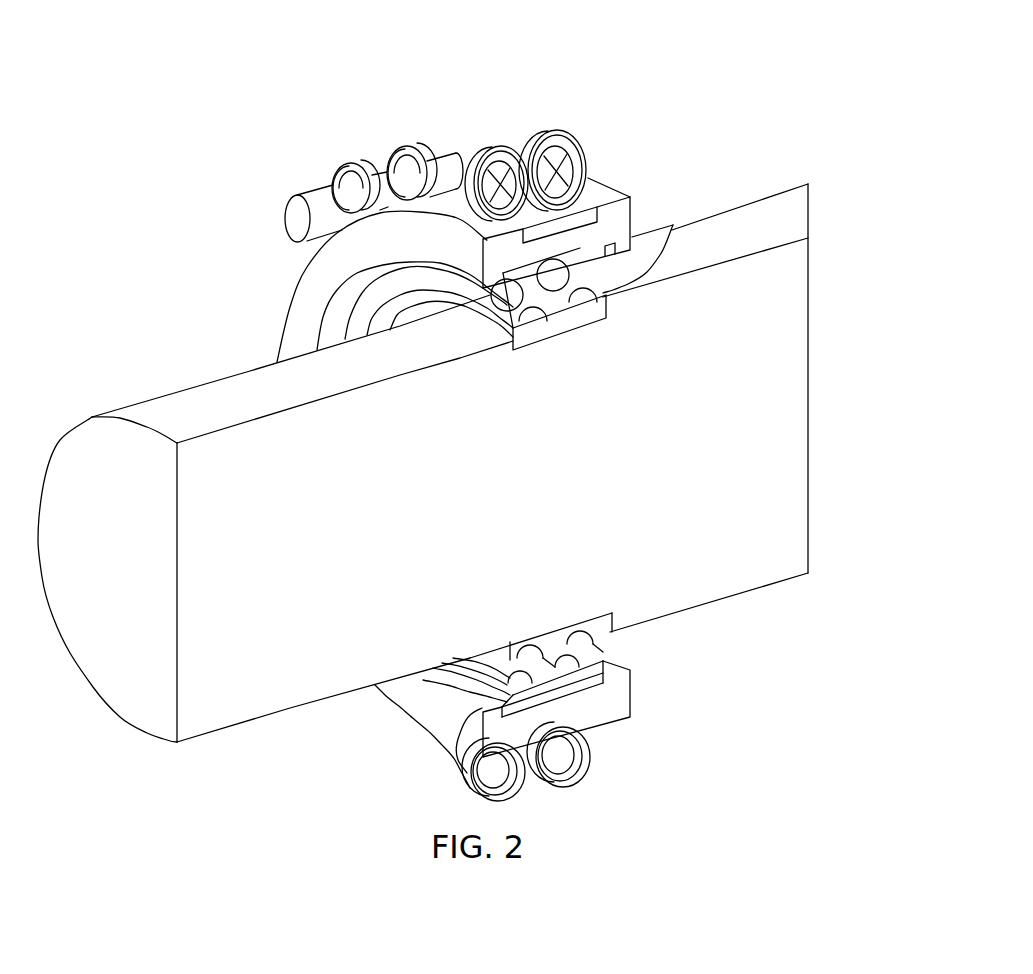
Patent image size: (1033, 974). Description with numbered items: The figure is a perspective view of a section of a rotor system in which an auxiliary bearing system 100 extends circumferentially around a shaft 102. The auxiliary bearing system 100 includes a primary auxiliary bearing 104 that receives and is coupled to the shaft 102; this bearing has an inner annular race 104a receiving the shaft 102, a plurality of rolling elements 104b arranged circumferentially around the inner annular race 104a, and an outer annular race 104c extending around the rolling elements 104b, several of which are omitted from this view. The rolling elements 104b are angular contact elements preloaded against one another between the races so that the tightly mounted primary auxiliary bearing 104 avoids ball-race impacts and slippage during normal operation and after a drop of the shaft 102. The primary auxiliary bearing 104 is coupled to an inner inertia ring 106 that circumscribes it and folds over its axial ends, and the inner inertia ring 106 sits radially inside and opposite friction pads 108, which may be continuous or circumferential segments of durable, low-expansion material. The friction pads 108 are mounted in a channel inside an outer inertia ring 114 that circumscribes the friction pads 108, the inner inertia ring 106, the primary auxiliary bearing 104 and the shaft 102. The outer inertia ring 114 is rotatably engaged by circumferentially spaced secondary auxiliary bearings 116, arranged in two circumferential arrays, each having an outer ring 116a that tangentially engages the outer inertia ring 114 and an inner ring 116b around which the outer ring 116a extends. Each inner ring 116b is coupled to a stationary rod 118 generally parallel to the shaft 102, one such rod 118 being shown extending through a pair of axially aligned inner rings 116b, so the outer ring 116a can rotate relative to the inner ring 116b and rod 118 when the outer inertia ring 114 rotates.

The auxiliary bearing system 100 is at (286, 301).
The shaft 102 is at (145, 399).
The primary auxiliary bearing 104 is at (630, 648).
The inner annular race 104a is at (470, 667).
The rolling elements 104b is at (618, 282).
The outer annular race 104c is at (456, 762).
The inner inertia ring 106 is at (603, 679).
The friction pads 108 is at (610, 715).
The outer inertia ring 114 is at (636, 205).
The secondary auxiliary bearings 116 is at (593, 152).
The outer ring 116a is at (357, 160).
The inner ring 116b is at (327, 184).
The rod 118 is at (453, 166).